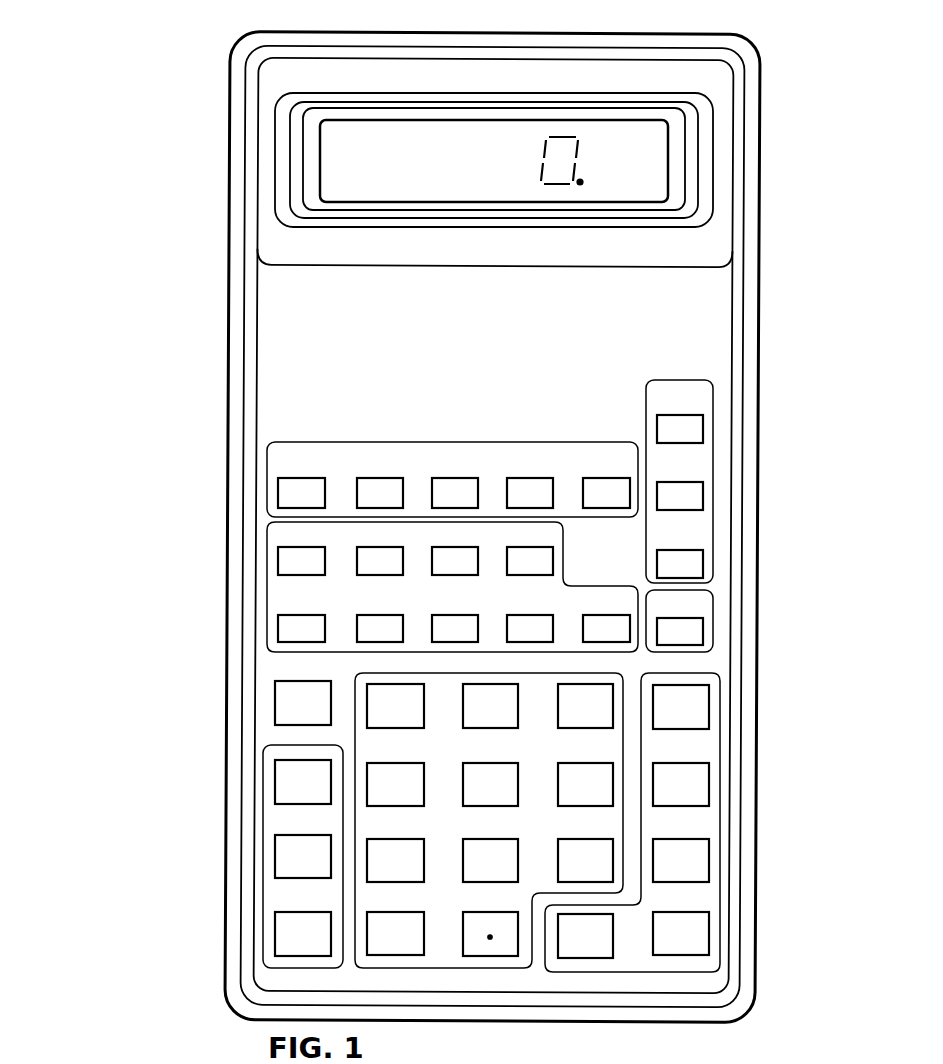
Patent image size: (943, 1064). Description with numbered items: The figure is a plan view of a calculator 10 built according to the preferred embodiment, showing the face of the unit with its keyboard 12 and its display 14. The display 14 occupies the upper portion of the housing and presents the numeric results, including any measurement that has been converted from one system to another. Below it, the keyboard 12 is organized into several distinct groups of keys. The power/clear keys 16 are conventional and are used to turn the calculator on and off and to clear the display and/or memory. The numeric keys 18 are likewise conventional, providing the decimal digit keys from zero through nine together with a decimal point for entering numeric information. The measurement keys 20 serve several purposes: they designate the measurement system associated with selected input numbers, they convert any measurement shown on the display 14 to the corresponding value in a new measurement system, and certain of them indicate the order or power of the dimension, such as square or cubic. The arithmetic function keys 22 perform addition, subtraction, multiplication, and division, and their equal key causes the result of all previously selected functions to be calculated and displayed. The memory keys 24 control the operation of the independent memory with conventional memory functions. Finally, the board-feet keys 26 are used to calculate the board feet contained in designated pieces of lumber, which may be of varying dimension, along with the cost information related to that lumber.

The calculator 10 is at (133, 70).
The keyboard 12 is at (215, 1041).
The display 14 is at (312, 163).
The power/clear keys 16 is at (713, 517).
The numeric keys 18 is at (480, 969).
The measurement keys 20 is at (267, 545).
The function keys 22 is at (720, 745).
The memory keys 24 is at (713, 612).
The board-feet keys 26 is at (267, 458).